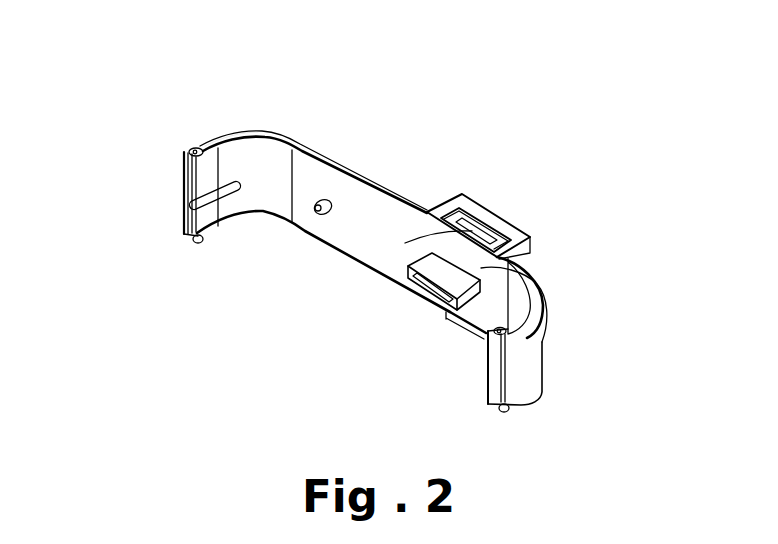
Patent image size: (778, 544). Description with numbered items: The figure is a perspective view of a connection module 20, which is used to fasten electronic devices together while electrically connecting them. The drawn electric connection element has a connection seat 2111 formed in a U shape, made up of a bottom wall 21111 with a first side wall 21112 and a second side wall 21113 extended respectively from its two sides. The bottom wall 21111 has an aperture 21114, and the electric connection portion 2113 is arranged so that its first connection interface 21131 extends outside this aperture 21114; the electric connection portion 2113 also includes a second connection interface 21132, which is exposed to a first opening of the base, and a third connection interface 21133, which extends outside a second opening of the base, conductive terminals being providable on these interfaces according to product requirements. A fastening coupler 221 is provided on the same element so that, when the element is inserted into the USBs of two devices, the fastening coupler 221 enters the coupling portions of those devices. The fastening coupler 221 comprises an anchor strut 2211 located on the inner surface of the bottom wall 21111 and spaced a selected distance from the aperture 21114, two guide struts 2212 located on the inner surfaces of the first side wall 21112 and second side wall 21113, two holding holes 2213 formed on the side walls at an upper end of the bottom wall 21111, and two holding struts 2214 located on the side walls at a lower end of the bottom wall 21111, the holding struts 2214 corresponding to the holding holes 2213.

The connection module 20 is at (605, 70).
The connection seat 2111 is at (663, 228).
The bottom wall 21111 is at (380, 233).
The first side wall 21112 is at (261, 170).
The second side wall 21113 is at (543, 343).
The aperture 21114 is at (540, 252).
The electric connection portion 2113 is at (416, 438).
The first connection interface 21131 is at (406, 268).
The second connection interface 21132 is at (404, 243).
The third connection interface 21133 is at (466, 330).
The fastening coupler 221 is at (97, 133).
The anchor strut 2211 is at (316, 212).
The guide strut 2212 is at (200, 191).
The holding hole 2213 is at (192, 151).
The holding strut 2214 is at (190, 245).